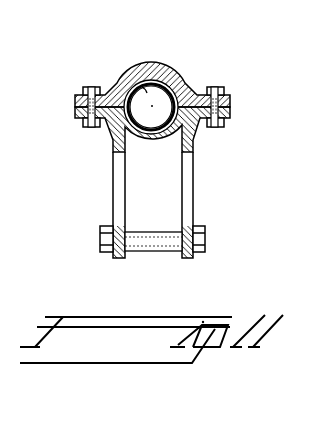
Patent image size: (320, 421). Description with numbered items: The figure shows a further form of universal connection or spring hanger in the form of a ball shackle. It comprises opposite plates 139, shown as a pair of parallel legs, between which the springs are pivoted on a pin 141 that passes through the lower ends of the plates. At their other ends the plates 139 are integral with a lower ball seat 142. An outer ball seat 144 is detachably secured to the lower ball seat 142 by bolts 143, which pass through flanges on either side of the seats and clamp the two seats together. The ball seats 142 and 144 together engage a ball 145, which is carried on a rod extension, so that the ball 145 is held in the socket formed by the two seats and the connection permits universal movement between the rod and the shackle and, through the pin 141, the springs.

The opposite plates 139 is at (185, 186).
The pin 141 is at (158, 238).
The lower ball seat 142 is at (201, 127).
The bolts 143 is at (256, 67).
The outer ball seat 144 is at (160, 67).
The ball 145 is at (119, 72).